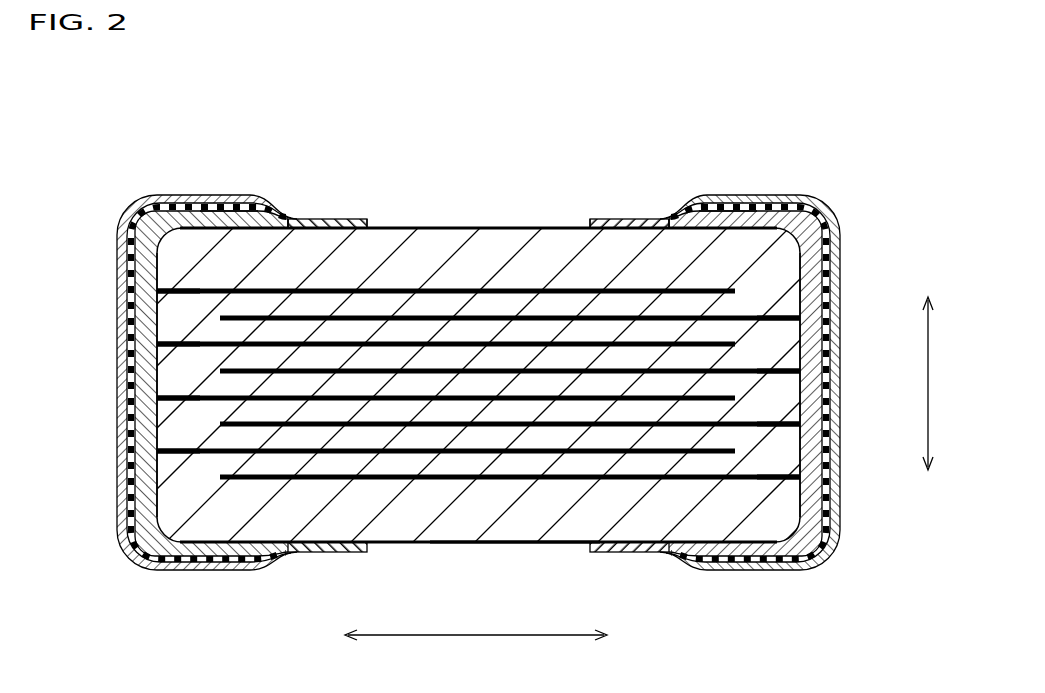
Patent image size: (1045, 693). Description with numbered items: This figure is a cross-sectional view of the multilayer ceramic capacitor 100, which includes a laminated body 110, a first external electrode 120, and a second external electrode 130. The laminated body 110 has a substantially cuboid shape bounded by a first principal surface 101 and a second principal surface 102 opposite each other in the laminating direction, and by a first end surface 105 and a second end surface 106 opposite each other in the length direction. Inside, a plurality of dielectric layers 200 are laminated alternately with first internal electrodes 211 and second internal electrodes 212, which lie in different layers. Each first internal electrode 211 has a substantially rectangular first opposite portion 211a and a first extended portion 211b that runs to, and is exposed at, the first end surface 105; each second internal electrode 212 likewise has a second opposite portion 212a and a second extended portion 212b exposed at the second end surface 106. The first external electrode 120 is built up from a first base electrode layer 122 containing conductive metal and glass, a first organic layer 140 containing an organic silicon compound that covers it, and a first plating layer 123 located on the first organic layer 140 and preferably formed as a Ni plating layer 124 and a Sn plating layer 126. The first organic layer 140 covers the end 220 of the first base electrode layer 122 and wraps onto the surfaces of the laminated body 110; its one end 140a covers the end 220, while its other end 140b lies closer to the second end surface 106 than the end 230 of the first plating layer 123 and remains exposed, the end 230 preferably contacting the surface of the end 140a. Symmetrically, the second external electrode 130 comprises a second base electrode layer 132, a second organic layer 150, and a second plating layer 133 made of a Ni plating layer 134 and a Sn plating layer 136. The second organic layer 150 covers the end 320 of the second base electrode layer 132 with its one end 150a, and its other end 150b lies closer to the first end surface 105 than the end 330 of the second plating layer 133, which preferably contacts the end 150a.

The multilayer ceramic capacitor 100 is at (177, 131).
The first principal surface 101 is at (427, 227).
The second principal surface 102 is at (550, 543).
The first end surface 105 is at (157, 478).
The second end surface 106 is at (795, 412).
The laminated body 110 is at (461, 546).
The first external electrode 120 is at (147, 192).
The first base electrode layer 122 is at (140, 402).
The first plating layer 123 is at (300, 624).
The Ni plating layer 124 is at (192, 562).
The Sn plating layer 126 is at (252, 570).
The second external electrode 130 is at (808, 192).
The second base electrode layer 132 is at (810, 373).
The second plating layer 133 is at (830, 624).
The Ni plating layer 134 is at (716, 562).
The Sn plating layer 136 is at (790, 570).
The first organic layer 140 is at (327, 220).
The one end of the first organic layer 140a is at (289, 226).
The other end of the first organic layer 140b is at (363, 221).
The second organic layer 150 is at (628, 220).
The one end of the second organic layer 150a is at (665, 227).
The other end of the second organic layer 150b is at (600, 220).
The dielectric layers 200 is at (410, 503).
The first internal electrodes 211 is at (273, 454).
The first opposite portion 211a is at (452, 289).
The first extended portion 211b is at (172, 450).
The second internal electrodes 212 is at (623, 480).
The second opposite portion 212a is at (507, 316).
The second extended portion 212b is at (783, 474).
The end of the first base electrode layer 220 is at (256, 202).
The end of the first plating layer 230 is at (289, 224).
The end of the second base electrode layer 320 is at (689, 218).
The end of the second plating layer 330 is at (656, 222).